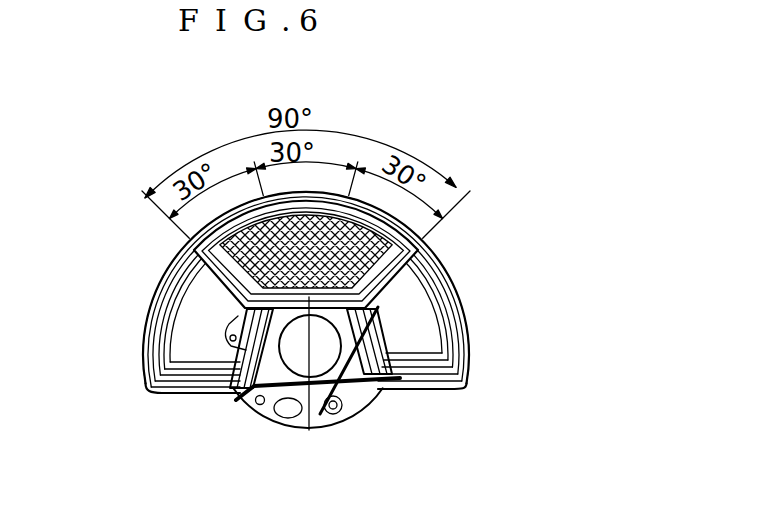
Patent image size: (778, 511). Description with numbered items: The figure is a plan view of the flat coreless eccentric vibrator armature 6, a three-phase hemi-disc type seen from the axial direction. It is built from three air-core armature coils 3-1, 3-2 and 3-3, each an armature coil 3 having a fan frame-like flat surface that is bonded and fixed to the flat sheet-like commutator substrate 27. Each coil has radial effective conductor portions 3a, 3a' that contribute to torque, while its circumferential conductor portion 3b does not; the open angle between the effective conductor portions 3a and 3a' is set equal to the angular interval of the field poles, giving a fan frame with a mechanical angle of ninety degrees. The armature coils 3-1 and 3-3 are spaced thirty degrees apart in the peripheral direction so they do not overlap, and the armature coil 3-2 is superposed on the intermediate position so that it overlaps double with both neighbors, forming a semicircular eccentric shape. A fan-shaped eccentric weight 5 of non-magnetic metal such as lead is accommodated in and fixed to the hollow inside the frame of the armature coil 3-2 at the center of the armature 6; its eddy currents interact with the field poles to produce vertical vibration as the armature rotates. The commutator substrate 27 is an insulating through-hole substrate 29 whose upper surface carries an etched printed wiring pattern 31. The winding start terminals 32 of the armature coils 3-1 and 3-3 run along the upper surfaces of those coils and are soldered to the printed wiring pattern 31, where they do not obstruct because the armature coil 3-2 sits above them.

The armature coil 3 is at (313, 419).
The armature coil 3-1 is at (152, 360).
The armature coil 3-2 is at (188, 236).
The armature coil 3-3 is at (452, 318).
The effective conductor portion 3a is at (163, 338).
The effective conductor portion 3a' is at (445, 322).
The conductor portion in the circumferential direction 3b is at (322, 190).
The eccentric weight 5 is at (415, 247).
The flat coreless eccentric vibrator armature 6 is at (488, 169).
The commutator substrate 27 is at (250, 412).
The through-hole substrate 29 is at (310, 421).
The printed wiring pattern 31 is at (346, 406).
The winding start terminals 32 is at (232, 421).